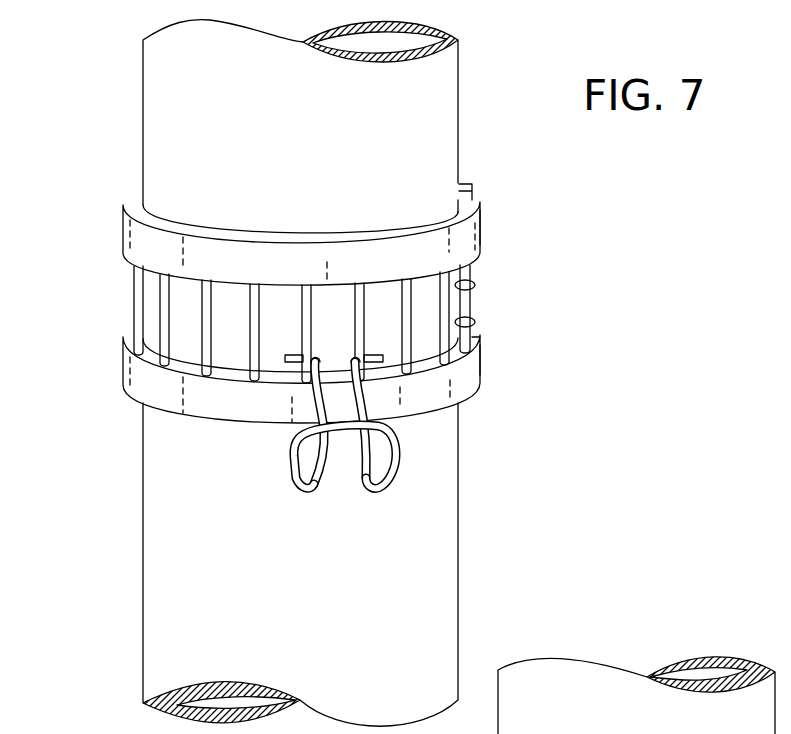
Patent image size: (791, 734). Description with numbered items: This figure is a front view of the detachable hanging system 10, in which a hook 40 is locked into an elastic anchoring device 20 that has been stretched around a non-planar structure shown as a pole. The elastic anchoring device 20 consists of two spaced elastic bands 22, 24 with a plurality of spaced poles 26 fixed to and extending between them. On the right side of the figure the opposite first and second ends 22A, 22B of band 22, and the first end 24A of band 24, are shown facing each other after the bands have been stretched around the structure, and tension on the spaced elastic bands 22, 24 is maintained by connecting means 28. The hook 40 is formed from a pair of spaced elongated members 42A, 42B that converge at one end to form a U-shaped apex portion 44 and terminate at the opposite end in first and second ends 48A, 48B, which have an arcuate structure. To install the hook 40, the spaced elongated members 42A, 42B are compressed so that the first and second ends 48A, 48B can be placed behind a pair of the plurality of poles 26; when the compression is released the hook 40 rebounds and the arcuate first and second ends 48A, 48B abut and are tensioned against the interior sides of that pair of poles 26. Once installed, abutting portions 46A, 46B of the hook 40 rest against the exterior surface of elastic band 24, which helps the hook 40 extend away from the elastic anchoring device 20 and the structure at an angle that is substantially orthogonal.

The detachable hanging system 10 is at (125, 147).
The elastic anchoring device 20 is at (385, 207).
The elastic band 22 is at (196, 231).
The first end of band 22A is at (481, 226).
The second end of band 22B is at (472, 191).
The elastic band 24 is at (172, 398).
The first end of band 24A is at (481, 362).
The plurality of spaced poles 26 is at (165, 332).
The connecting means 28 is at (476, 322).
The hook 40 is at (419, 465).
The spaced elongated member 42A is at (327, 484).
The spaced elongated member 42B is at (365, 472).
The apex portion 44 is at (342, 428).
The abutting portion 46A is at (322, 401).
The abutting portion 46B is at (365, 405).
The first end 48A is at (297, 352).
The second end 48B is at (379, 353).